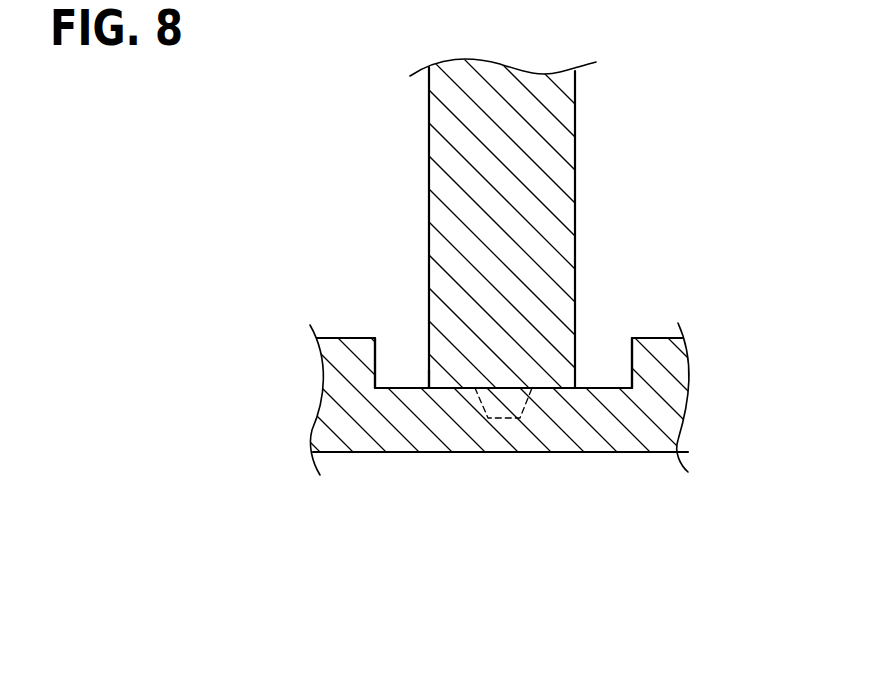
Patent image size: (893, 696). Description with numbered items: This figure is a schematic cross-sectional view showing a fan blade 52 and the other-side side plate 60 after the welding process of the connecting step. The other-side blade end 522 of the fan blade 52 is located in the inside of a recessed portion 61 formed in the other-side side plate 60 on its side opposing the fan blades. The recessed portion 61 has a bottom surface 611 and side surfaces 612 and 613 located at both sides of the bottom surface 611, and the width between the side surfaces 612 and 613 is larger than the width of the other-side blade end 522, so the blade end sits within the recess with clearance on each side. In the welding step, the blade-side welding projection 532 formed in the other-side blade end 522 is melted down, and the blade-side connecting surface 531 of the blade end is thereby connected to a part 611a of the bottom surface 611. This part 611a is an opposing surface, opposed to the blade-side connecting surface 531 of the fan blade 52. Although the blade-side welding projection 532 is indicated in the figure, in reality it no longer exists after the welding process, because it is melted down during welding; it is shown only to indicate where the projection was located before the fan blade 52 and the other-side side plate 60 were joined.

The fan blade 52 is at (522, 170).
The other-side blade end 522 is at (430, 392).
The blade-side connecting surface 531 is at (553, 390).
The blade-side welding projection 532 is at (490, 418).
The other-side side plate 60 is at (335, 418).
The recessed portion 61 is at (593, 378).
The bottom surface 611 is at (603, 387).
The part of the bottom surface 611a is at (453, 387).
The side surface 612 is at (380, 368).
The side surface 613 is at (618, 360).